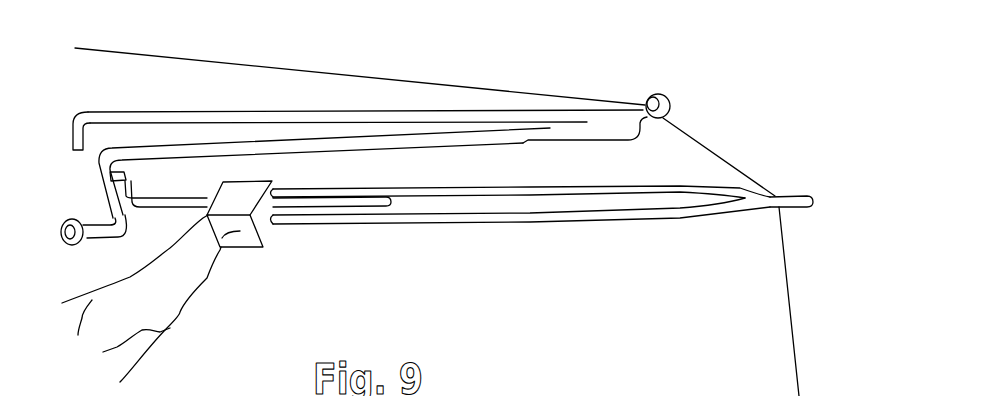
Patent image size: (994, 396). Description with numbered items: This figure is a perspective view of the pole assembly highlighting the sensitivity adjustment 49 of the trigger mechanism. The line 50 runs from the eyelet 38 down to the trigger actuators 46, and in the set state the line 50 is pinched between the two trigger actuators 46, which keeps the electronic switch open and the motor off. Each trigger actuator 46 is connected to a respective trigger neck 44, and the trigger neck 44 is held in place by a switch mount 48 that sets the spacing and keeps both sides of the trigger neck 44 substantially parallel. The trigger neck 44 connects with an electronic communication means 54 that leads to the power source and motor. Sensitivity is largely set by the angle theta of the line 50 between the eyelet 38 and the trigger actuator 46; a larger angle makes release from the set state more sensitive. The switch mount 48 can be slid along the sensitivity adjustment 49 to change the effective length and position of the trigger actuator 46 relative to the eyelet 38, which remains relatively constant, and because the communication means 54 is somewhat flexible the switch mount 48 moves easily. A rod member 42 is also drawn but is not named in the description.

The eyelet 38 is at (681, 100).
The upper rod 42 is at (522, 147).
The trigger neck 44 is at (405, 191).
The trigger actuator 46 is at (815, 182).
The switch mount 48 is at (258, 249).
The sensitivity adjustment 49 is at (323, 203).
The line 50 is at (374, 73).
The electronic communication means 54 is at (141, 298).